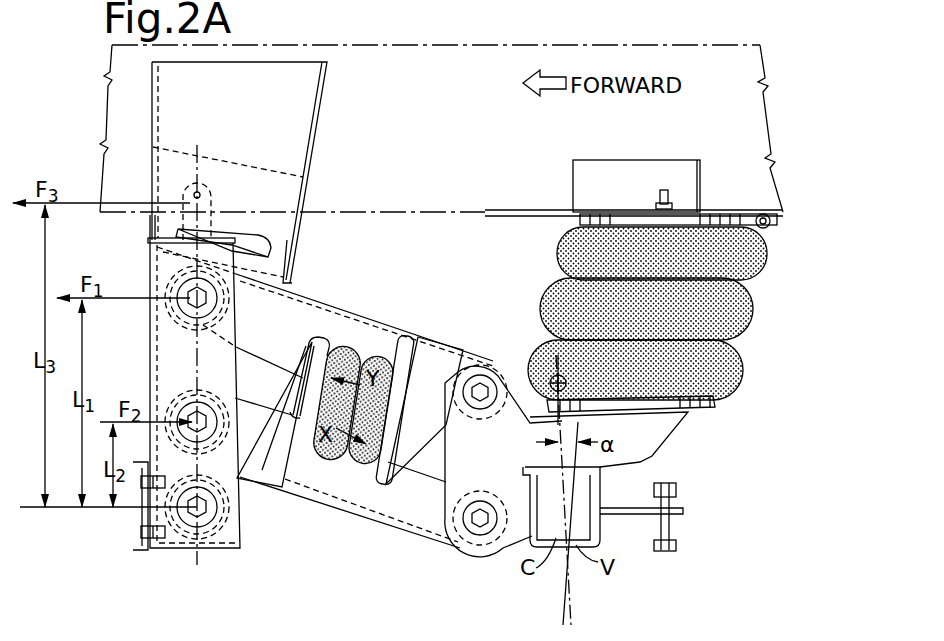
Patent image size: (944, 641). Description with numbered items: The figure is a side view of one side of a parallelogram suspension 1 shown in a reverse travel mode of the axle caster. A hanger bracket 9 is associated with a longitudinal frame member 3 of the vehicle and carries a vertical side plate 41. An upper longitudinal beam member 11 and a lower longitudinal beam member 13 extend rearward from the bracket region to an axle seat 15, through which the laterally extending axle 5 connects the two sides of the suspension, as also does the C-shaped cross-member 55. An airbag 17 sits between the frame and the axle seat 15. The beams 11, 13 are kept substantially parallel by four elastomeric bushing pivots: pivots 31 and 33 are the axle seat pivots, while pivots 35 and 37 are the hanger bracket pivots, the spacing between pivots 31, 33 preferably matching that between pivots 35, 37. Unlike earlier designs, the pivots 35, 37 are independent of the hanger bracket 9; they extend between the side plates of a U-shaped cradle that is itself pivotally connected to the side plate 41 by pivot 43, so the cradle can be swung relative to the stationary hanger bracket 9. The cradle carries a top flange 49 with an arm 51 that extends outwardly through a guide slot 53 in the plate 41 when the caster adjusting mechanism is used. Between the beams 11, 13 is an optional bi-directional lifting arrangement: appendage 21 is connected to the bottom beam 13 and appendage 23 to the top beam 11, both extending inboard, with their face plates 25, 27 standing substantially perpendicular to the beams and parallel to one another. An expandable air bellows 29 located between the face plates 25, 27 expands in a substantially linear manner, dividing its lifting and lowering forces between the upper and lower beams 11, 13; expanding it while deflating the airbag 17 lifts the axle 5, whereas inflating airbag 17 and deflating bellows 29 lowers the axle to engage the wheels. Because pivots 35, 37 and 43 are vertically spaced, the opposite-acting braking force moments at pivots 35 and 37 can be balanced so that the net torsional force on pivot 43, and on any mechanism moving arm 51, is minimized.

The suspension 1 is at (766, 362).
The longitudinal frame member 3 is at (466, 125).
The axle 5 is at (600, 523).
The hanger bracket 9 is at (237, 102).
The upper longitudinal beam member 11 is at (345, 344).
The lower longitudinal beam member 13 is at (367, 501).
The axle seat 15 is at (494, 459).
The airbag 17 is at (676, 266).
The appendage 21 is at (268, 481).
The appendage 23 is at (432, 354).
The face plate 25 is at (404, 340).
The face plate 27 is at (297, 470).
The expandable air bellows 29 is at (350, 415).
The axle seat pivot 31 is at (497, 372).
The axle seat pivot 33 is at (473, 550).
The hanger bracket pivot 35 is at (176, 282).
The hanger bracket pivot 37 is at (192, 395).
The vertical side plate 41 is at (160, 226).
The pivot 43 is at (226, 550).
The top flange 49 is at (238, 232).
The arm 51 is at (214, 193).
The guide slot 53 is at (283, 249).
The "C"-shaped cross-member 55 is at (147, 553).